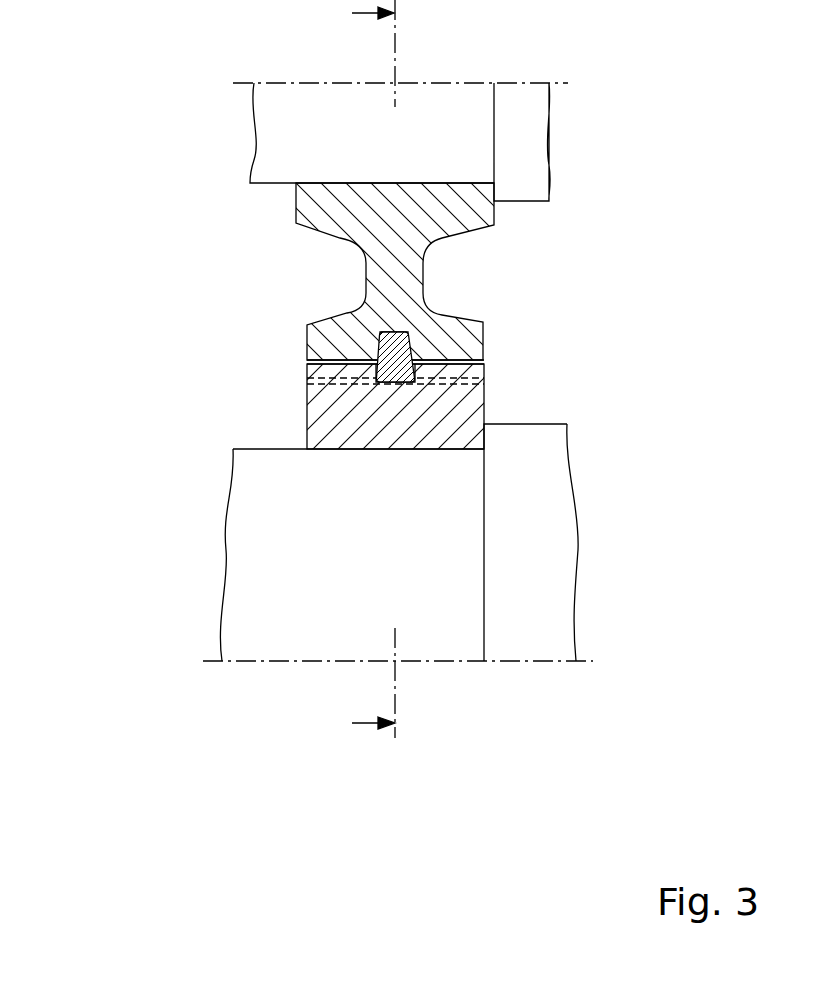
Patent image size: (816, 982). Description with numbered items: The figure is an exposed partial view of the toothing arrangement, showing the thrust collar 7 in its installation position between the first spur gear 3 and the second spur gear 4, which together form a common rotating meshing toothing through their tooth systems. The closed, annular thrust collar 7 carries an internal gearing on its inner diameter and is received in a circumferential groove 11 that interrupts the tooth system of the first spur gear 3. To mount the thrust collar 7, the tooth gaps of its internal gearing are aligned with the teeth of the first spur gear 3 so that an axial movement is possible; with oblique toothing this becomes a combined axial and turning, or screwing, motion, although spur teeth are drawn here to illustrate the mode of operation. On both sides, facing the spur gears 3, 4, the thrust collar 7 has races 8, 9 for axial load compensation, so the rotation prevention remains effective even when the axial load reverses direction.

The first helical-cut spur gear 3 is at (355, 415).
The second helical-cut spur gear 4 is at (332, 203).
The thrust collar 7 is at (368, 356).
The race 8 is at (375, 356).
The race 9 is at (413, 345).
The circumferential groove 11 is at (372, 360).